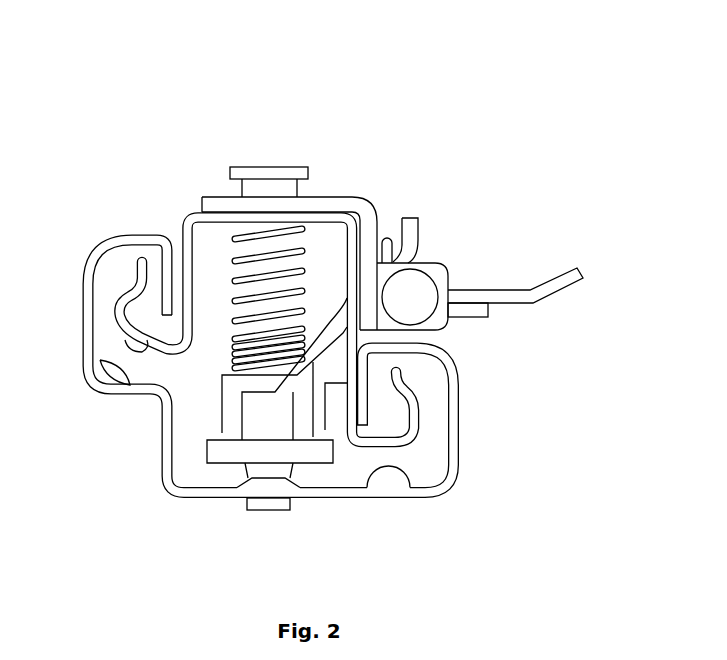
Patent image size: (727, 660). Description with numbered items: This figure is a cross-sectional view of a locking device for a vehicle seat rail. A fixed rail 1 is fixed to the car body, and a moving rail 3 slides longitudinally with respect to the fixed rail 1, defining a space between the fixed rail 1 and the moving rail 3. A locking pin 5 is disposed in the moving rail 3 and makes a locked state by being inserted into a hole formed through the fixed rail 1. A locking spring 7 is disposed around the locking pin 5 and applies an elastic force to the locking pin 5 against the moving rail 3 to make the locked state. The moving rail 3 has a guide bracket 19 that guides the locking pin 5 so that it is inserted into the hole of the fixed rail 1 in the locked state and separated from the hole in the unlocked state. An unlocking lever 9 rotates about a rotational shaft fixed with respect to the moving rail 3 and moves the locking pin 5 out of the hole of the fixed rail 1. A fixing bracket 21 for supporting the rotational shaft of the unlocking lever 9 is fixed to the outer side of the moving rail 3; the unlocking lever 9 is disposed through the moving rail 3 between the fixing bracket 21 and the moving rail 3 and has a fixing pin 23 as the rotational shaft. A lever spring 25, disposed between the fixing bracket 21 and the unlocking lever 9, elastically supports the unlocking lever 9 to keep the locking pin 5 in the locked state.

The fixed rail 1 is at (222, 494).
The moving rail 3 is at (190, 230).
The locking pin 5 is at (272, 172).
The locking spring 7 is at (237, 296).
The unlocking lever 9 is at (322, 350).
The guide bracket 19 is at (213, 453).
The fixing bracket 21 is at (335, 203).
The fixing pin 23 is at (423, 290).
The lever spring 25 is at (386, 238).